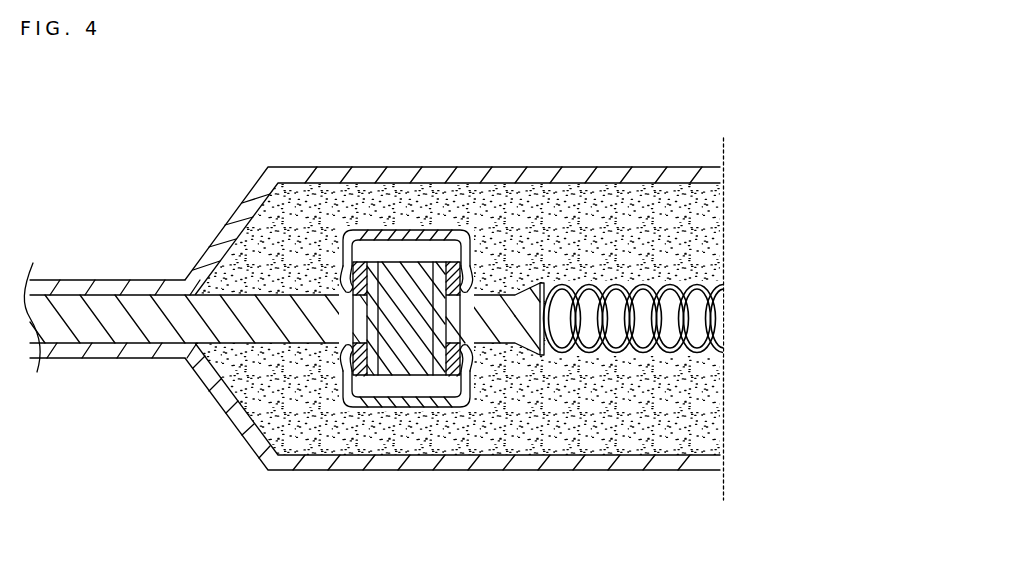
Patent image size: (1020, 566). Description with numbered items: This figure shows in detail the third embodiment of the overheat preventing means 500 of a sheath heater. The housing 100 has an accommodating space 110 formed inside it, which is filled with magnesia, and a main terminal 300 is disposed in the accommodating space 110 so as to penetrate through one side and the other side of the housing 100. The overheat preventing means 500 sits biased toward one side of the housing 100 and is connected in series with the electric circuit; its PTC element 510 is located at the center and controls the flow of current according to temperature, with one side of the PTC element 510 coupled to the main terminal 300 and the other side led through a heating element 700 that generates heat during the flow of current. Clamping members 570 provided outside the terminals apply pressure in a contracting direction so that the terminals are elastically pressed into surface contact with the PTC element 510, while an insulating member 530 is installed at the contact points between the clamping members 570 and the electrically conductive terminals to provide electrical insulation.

The housing 100 is at (670, 172).
The accommodating space 110 is at (557, 226).
The main terminal 300 is at (143, 310).
The overheat preventing means 500 is at (439, 319).
The PTC element 510 is at (406, 357).
The insulating member 530 is at (460, 372).
The clamping member 570 is at (441, 232).
The heating element 700 is at (617, 350).